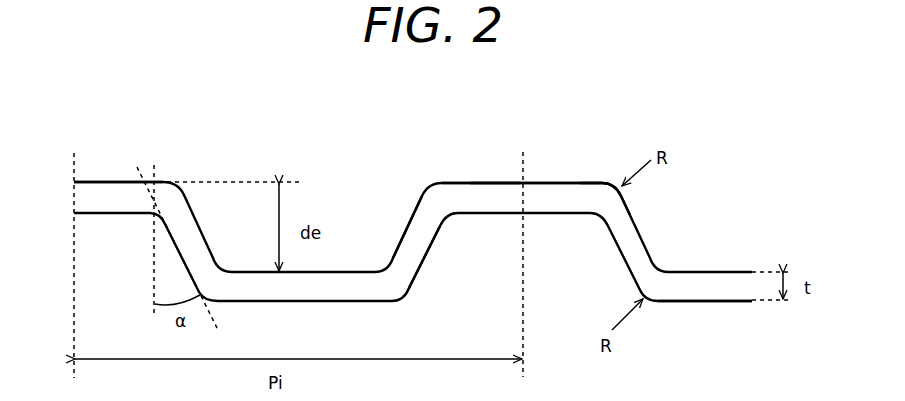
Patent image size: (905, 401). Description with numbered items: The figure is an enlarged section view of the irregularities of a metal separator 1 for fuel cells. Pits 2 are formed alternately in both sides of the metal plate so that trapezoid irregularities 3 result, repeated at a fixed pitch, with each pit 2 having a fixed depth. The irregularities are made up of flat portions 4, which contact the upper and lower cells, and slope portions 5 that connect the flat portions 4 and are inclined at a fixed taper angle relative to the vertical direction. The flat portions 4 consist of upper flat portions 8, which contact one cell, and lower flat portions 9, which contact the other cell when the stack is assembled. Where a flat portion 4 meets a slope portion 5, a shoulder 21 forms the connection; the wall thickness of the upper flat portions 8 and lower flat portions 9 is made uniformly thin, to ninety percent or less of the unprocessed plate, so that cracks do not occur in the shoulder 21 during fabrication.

The metal separator 1 is at (732, 145).
The pit 2 is at (408, 223).
The trapezoid irregularities 3 is at (447, 183).
The flat portion 4 is at (121, 182).
The slope portion 5 is at (423, 262).
The upper flat portion 8 is at (500, 183).
The lower flat portion 9 is at (688, 301).
The shoulder 21 is at (602, 183).